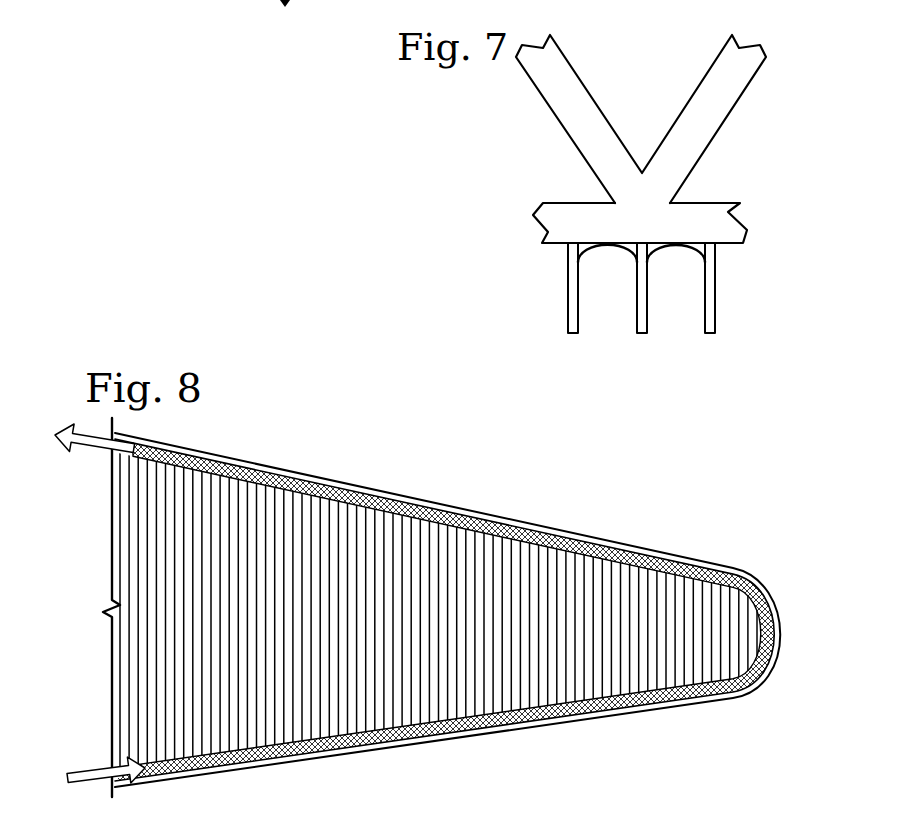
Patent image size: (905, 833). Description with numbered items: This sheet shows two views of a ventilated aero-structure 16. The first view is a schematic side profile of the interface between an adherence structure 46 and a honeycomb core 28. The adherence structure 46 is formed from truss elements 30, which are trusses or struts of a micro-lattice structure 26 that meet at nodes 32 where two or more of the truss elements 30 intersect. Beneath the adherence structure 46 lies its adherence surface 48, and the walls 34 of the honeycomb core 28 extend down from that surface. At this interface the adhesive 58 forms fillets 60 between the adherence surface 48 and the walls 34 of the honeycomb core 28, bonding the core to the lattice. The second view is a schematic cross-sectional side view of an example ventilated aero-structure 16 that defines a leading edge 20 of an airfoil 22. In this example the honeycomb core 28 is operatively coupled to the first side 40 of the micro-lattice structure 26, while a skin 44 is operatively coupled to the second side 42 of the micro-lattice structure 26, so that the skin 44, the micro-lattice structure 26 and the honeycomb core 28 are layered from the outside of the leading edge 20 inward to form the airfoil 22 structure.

In FIG. 7, the ventilated aero-structure 16 is at (762, 18).
In FIG. 8, the ventilated aero-structure 16 is at (757, 465).
In FIG. 8, the leading edge 20 is at (551, 490).
In FIG. 8, the airfoil 22 is at (633, 477).
In FIG. 8, the micro-lattice structure 26 is at (721, 555).
In FIG. 7, the honeycomb core 28 is at (725, 313).
In FIG. 8, the honeycomb core 28 is at (598, 693).
In FIG. 7, the truss elements 30 is at (537, 90).
In FIG. 7, the nodes 32 is at (645, 200).
In FIG. 7, the walls of the honeycomb core 34 is at (632, 318).
In FIG. 8, the first side of the micro-lattice structure 40 is at (687, 677).
In FIG. 8, the second side of the micro-lattice structure 42 is at (582, 540).
In FIG. 8, the skin 44 is at (345, 482).
In FIG. 7, the adherence structure 46 is at (569, 192).
In FIG. 7, the adherence surface 48 is at (730, 245).
In FIG. 7, the adhesive 58 is at (682, 258).
In FIG. 7, the fillets 60 is at (586, 259).